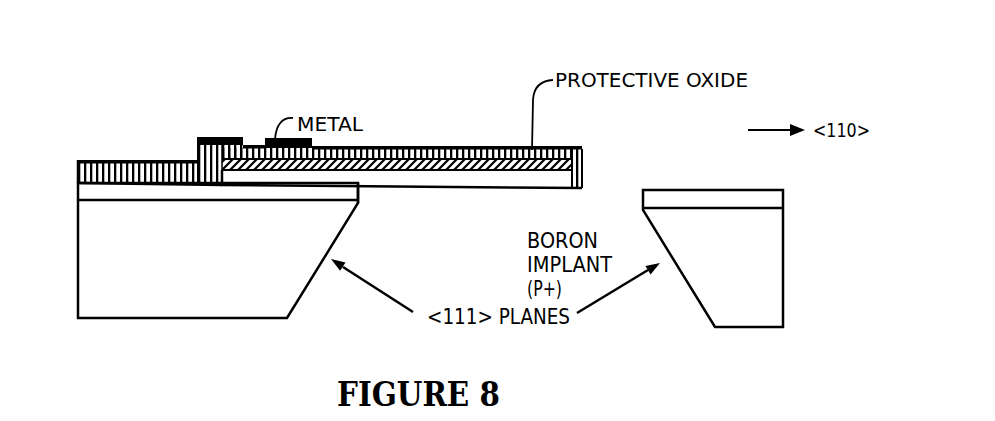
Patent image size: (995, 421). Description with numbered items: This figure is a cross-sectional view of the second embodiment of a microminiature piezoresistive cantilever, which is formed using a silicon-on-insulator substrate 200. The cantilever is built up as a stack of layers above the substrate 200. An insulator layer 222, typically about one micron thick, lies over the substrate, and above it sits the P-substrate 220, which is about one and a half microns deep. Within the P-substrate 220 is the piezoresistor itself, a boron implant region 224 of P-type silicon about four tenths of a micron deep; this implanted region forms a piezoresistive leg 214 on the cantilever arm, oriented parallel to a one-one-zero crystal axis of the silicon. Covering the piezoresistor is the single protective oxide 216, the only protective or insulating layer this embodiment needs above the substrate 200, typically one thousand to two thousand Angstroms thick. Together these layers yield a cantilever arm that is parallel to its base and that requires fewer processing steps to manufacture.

The silicon-on-insulator substrate 200 is at (231, 300).
The piezoresistive leg 214 is at (583, 160).
The protective oxide layer 216 is at (581, 150).
The P-substrate 220 is at (437, 176).
The insulator layer 222 is at (362, 201).
The boron implant region 224 is at (500, 166).